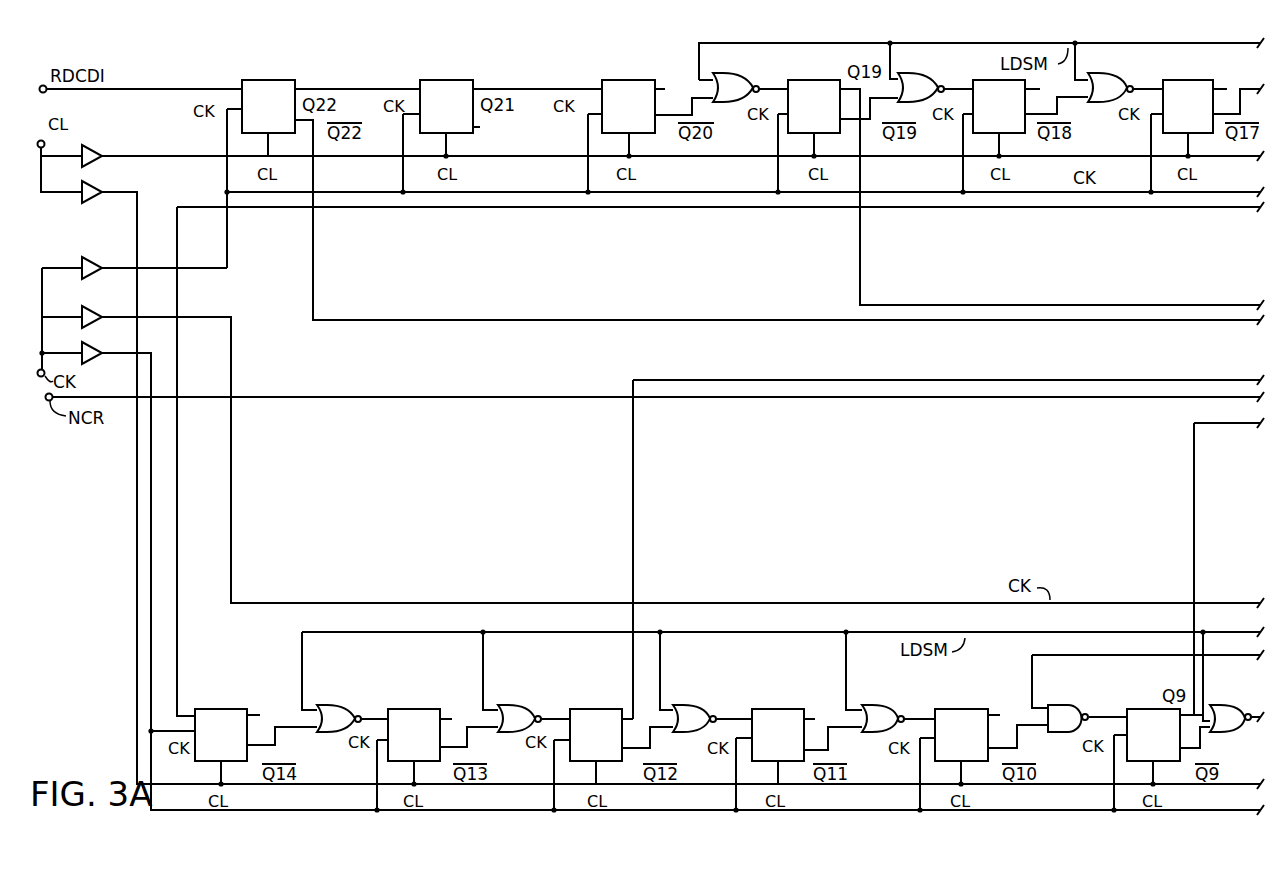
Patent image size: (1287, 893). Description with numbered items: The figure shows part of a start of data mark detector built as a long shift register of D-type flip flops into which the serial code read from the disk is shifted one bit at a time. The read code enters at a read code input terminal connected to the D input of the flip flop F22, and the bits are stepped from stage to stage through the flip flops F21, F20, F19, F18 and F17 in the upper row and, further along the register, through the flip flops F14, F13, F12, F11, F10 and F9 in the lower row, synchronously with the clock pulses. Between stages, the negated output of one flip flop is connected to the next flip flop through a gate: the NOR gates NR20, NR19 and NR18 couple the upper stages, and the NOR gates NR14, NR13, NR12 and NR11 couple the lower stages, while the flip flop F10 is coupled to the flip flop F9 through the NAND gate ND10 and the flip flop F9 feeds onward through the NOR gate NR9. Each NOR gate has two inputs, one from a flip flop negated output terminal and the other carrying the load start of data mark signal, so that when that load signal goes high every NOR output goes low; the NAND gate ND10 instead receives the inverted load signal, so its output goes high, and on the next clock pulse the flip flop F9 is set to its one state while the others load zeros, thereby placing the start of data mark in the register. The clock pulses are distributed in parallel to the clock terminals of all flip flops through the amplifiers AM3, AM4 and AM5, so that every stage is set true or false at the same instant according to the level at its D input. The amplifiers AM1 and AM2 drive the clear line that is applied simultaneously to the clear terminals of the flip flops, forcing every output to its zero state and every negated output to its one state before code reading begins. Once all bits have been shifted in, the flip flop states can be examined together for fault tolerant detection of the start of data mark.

The flip flop F22 is at (268, 106).
The flip flop F21 is at (446, 106).
The flip flop F20 is at (628, 106).
The flip flop F19 is at (814, 106).
The flip flop F18 is at (999, 106).
The flip flop F17 is at (1188, 106).
The flip flop F14 is at (221, 735).
The flip flop F13 is at (414, 735).
The flip flop F12 is at (596, 735).
The flip flop F11 is at (778, 735).
The flip flop F10 is at (961, 735).
The flip flop F9 is at (1153, 735).
The NOR gate NR20 is at (733, 76).
The NOR gate NR19 is at (918, 76).
The NOR gate NR18 is at (1106, 76).
The NOR gate NR14 is at (326, 704).
The NOR gate NR13 is at (506, 704).
The NOR gate NR12 is at (690, 704).
The NOR gate NR11 is at (878, 704).
The NAND gate ND10 is at (1066, 704).
The NOR gate NR9 is at (1212, 704).
The amplifier AM1 is at (92, 146).
The amplifier AM2 is at (94, 182).
The amplifier AM3 is at (91, 258).
The amplifier AM4 is at (91, 307).
The amplifier AM5 is at (94, 348).